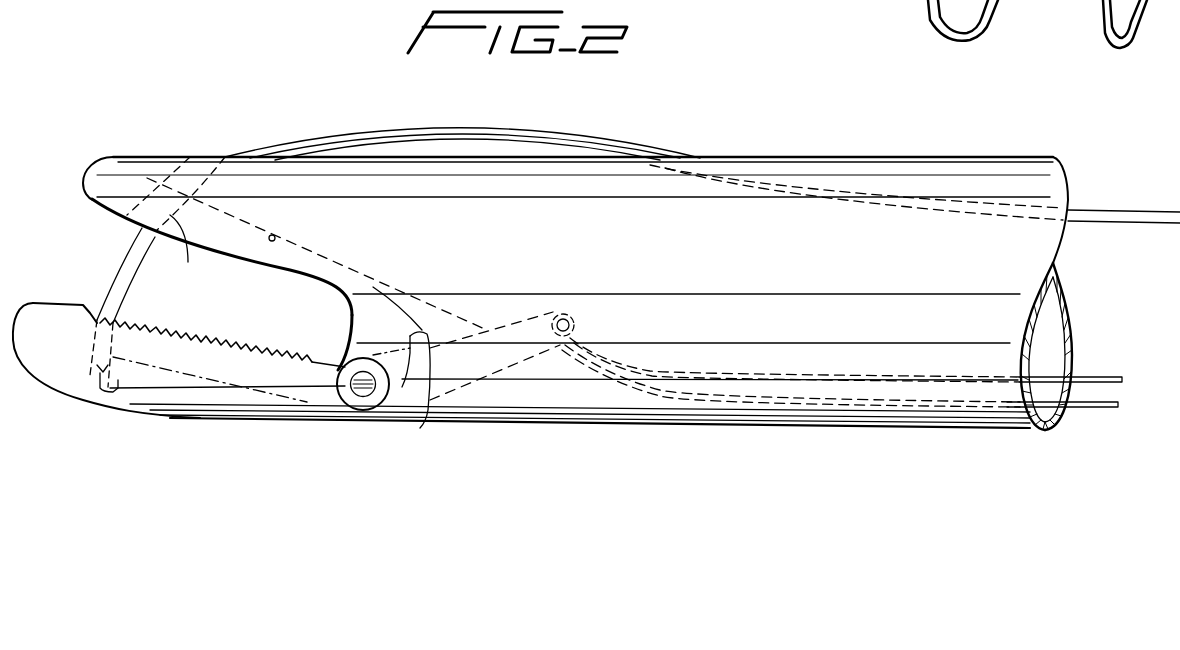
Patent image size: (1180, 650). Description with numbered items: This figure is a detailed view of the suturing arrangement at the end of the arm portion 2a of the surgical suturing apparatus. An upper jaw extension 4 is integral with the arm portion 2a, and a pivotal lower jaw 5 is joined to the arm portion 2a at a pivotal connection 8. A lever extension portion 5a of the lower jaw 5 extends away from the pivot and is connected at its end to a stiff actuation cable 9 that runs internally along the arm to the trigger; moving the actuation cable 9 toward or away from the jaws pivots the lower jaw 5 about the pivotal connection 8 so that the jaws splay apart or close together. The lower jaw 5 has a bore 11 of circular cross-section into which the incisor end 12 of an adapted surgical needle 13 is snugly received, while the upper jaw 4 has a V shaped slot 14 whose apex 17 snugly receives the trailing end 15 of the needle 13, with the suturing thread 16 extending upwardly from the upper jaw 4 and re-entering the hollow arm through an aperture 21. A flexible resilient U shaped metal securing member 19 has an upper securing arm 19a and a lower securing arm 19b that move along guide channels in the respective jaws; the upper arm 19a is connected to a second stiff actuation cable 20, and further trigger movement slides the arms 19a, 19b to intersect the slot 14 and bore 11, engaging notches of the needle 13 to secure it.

The arm portion 2a is at (788, 276).
The upper jaw extension 4 is at (117, 157).
The pivotal lower jaw 5 is at (52, 367).
The lever extension portion 5a is at (507, 353).
The pivotal connection 8 is at (363, 392).
The stiff actuation cable 9 is at (667, 392).
The bore 11 is at (117, 398).
The incisor end 12 is at (95, 387).
The adapted surgical needle 13 is at (125, 262).
The V shaped slot 14 is at (180, 190).
The trailing end 15 is at (186, 252).
The suturing thread 16 is at (468, 128).
The apex 17 is at (213, 195).
The U shaped metal securing member 19 is at (427, 395).
The upper securing arm 19a is at (228, 216).
The lower securing arm 19b is at (218, 385).
The second stiff actuation cable 20 is at (443, 312).
The aperture 21 is at (653, 157).